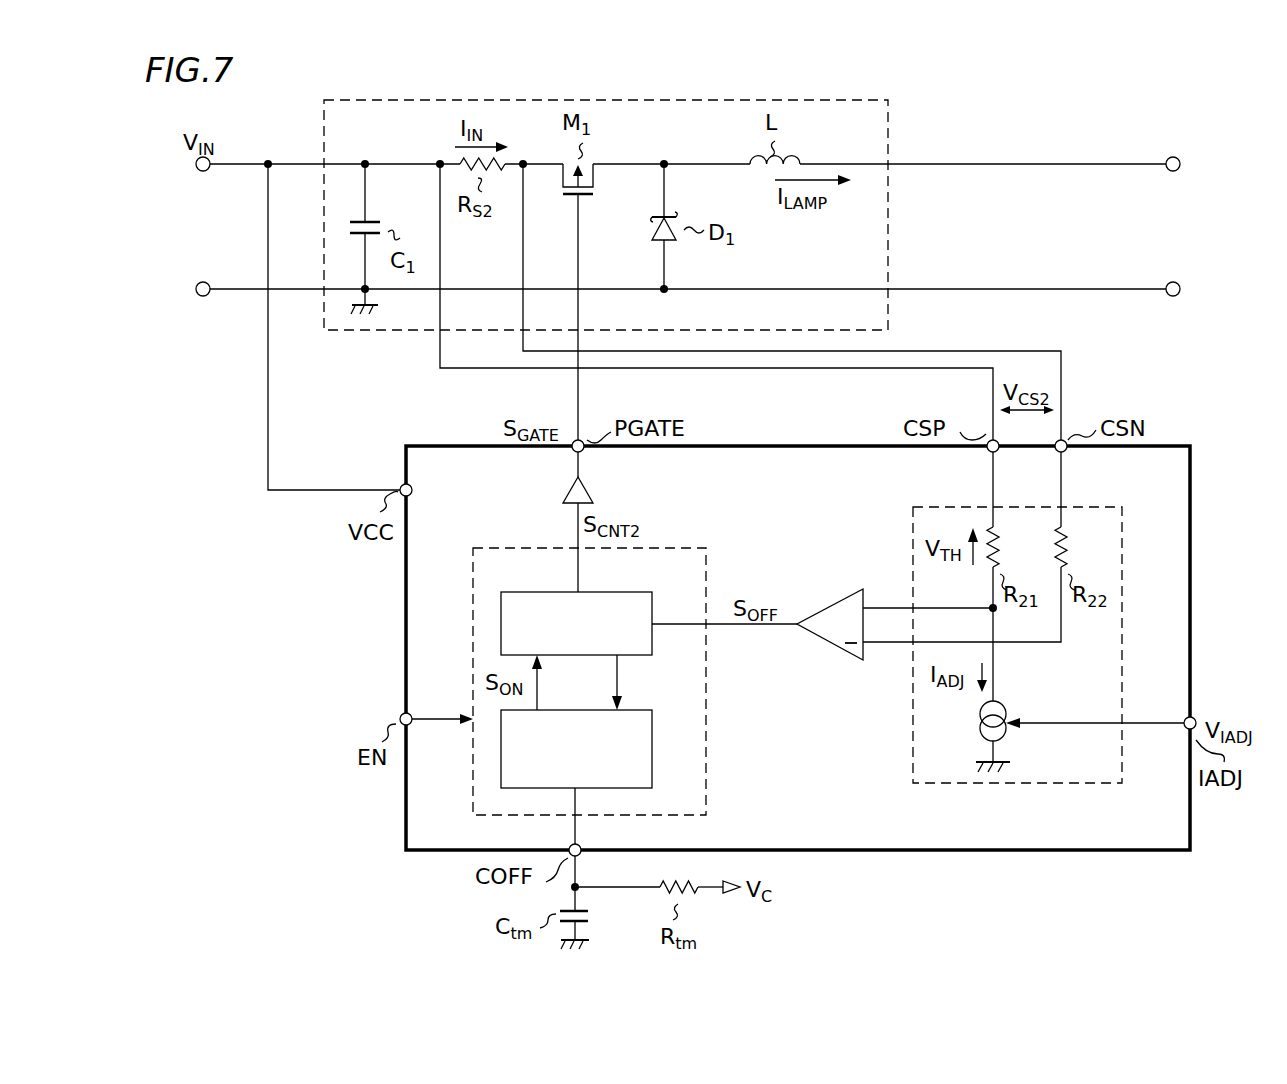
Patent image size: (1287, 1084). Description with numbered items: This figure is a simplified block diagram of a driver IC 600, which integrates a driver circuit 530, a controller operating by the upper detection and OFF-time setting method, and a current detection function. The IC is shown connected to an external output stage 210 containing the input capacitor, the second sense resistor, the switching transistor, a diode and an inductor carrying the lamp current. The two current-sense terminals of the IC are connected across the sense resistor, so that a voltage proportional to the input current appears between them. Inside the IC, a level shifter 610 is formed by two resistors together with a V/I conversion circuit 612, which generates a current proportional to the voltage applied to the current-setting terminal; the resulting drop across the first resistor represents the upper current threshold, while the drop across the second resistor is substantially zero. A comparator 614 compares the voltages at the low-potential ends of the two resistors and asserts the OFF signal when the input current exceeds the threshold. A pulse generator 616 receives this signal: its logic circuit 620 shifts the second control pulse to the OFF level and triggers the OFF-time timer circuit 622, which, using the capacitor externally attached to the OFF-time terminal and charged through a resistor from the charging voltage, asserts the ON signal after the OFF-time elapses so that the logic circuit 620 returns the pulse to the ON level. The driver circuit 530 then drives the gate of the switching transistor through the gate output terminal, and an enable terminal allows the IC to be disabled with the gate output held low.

The output circuit (switching converter stage with sense resistor, switching transis 210 is at (857, 80).
The driver IC 600 is at (404, 652).
The driver circuit 530 is at (592, 490).
The pulse generator 616 is at (684, 546).
The logic circuit 620 is at (590, 592).
The OFF-time timer circuit 622 is at (656, 696).
The comparator 614 is at (828, 641).
The V/I conversion circuit 612 is at (1005, 707).
The level shifter 610 is at (952, 783).